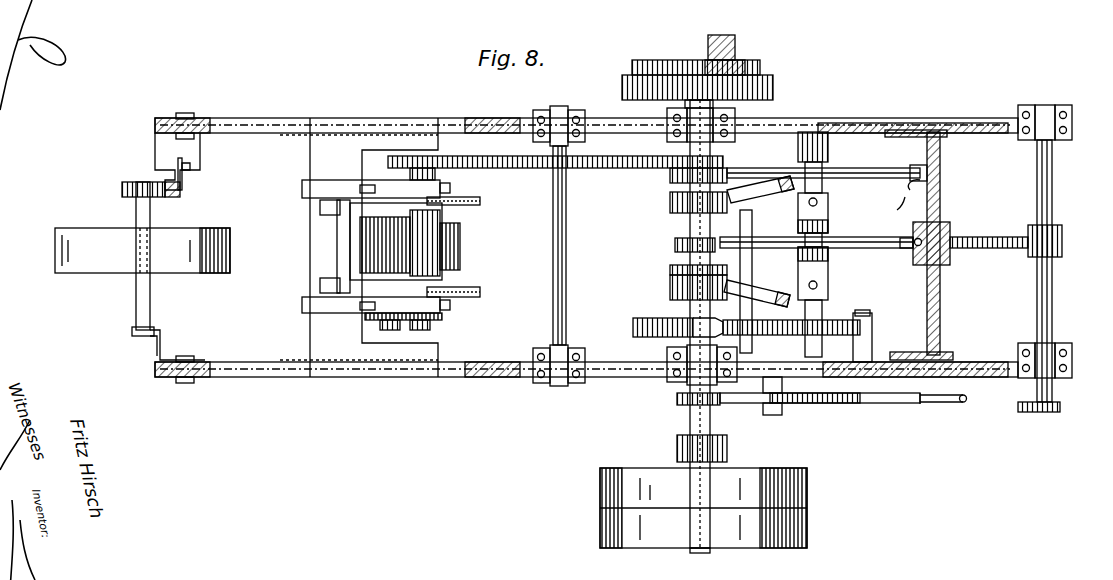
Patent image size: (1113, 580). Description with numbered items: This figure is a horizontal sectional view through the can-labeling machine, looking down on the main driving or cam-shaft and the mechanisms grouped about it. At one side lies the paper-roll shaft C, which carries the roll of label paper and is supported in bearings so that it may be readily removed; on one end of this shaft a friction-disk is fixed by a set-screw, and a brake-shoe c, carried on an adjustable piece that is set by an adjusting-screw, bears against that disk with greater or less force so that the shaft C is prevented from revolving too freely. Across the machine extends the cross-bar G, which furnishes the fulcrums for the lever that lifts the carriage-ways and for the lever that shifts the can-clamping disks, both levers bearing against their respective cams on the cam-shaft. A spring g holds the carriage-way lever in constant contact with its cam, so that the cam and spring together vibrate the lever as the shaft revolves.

The shaft of the paper roll C is at (150, 290).
The brake-shoe c is at (168, 196).
The cross-bar G is at (828, 218).
The spring g is at (907, 195).